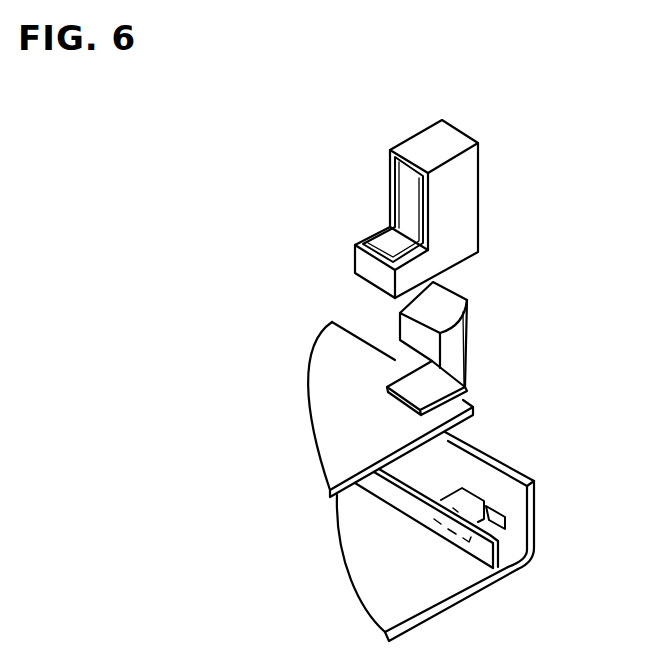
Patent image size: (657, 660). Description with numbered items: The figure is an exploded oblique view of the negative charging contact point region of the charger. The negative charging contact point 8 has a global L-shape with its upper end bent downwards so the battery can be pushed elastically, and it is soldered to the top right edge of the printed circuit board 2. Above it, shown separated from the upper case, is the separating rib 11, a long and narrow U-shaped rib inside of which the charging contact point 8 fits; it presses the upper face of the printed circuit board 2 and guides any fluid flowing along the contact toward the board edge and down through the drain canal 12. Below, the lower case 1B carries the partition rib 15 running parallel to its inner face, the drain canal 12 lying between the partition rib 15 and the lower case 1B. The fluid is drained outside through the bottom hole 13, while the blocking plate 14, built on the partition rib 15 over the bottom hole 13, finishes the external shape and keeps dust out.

The separating rib 11 is at (362, 226).
The drain canal 12 is at (409, 213).
The charging contact point 8 is at (462, 324).
The printed circuit board 2 is at (333, 402).
The blocking plate 14 is at (457, 497).
The bottom hole 13 is at (530, 542).
The partition rib 15 is at (408, 507).
The lower case 1B is at (435, 580).